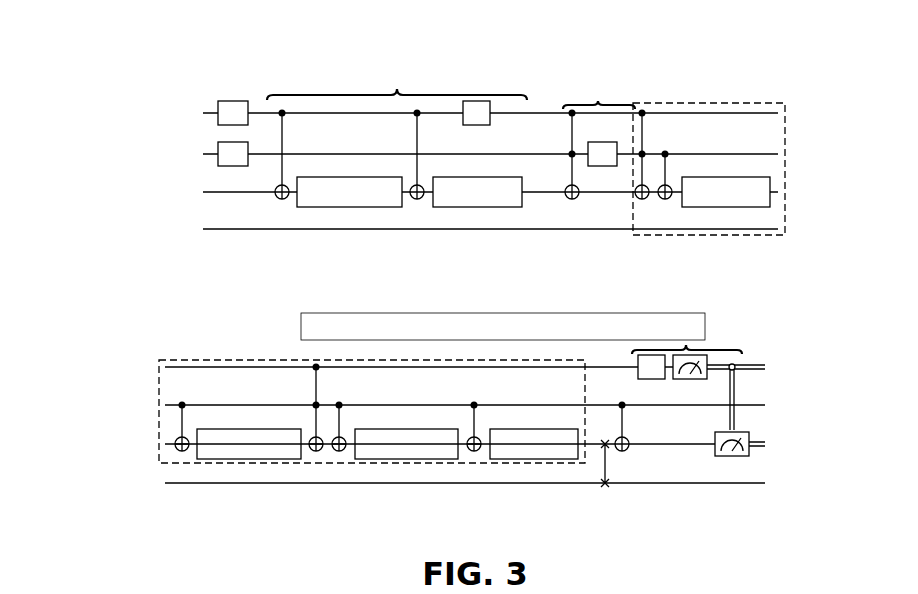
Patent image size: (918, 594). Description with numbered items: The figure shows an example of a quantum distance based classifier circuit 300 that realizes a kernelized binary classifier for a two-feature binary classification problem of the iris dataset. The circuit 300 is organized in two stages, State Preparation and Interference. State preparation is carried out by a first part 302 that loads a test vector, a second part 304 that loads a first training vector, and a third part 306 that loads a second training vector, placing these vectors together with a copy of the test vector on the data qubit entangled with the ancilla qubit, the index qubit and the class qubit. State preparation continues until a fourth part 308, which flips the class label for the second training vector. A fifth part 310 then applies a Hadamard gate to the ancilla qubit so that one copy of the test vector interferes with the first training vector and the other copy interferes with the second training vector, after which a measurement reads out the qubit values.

The quantum distance based classifier circuit 300 is at (466, 305).
The first part 302 is at (401, 86).
The second part 304 is at (599, 101).
The third part 306 is at (707, 103).
The fourth part 308 is at (603, 492).
The fifth part 310 is at (687, 345).